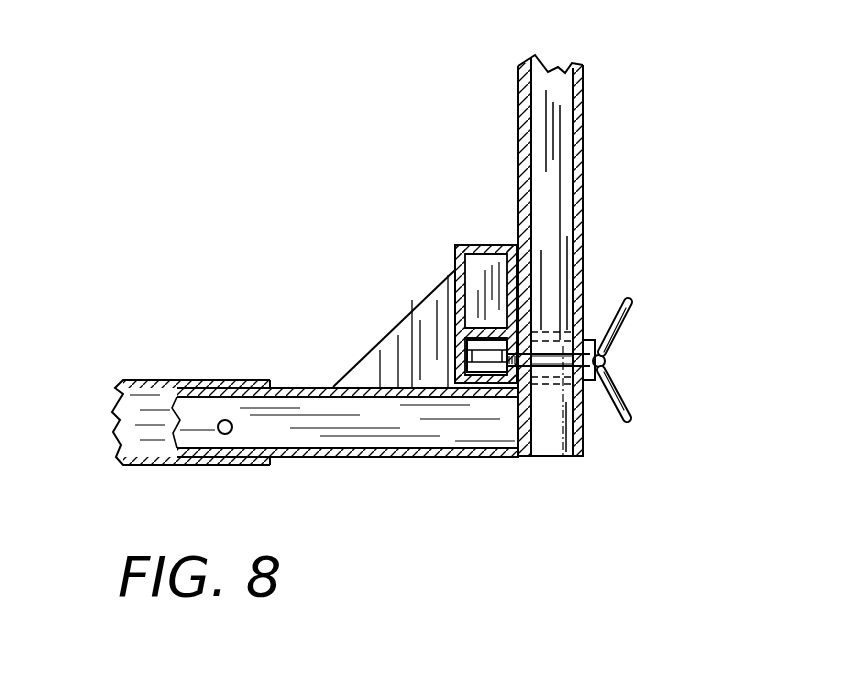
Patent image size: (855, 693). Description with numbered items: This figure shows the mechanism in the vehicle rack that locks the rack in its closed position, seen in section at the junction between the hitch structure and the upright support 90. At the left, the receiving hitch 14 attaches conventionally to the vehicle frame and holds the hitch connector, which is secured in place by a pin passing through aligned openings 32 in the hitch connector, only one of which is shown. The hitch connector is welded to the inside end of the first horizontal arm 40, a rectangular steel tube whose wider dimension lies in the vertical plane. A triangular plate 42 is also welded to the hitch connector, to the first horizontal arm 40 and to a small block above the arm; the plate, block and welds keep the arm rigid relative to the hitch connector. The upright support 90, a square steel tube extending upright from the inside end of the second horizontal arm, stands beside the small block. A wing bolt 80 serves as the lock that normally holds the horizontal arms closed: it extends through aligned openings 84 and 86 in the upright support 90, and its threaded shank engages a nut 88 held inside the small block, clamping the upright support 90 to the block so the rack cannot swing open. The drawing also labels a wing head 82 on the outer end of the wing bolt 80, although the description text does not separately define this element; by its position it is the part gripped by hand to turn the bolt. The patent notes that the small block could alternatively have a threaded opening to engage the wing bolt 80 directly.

The receiving hitch 14 is at (150, 385).
The aligned openings 32 is at (225, 420).
The first horizontal arm 40 is at (490, 245).
The triangular plate 42 is at (436, 288).
The wing bolt 80 is at (585, 422).
The wing nut 82 is at (630, 302).
The aligned opening 84 is at (585, 420).
The aligned opening 86 is at (537, 378).
The nut 88 is at (488, 367).
The upright support 90 is at (575, 122).